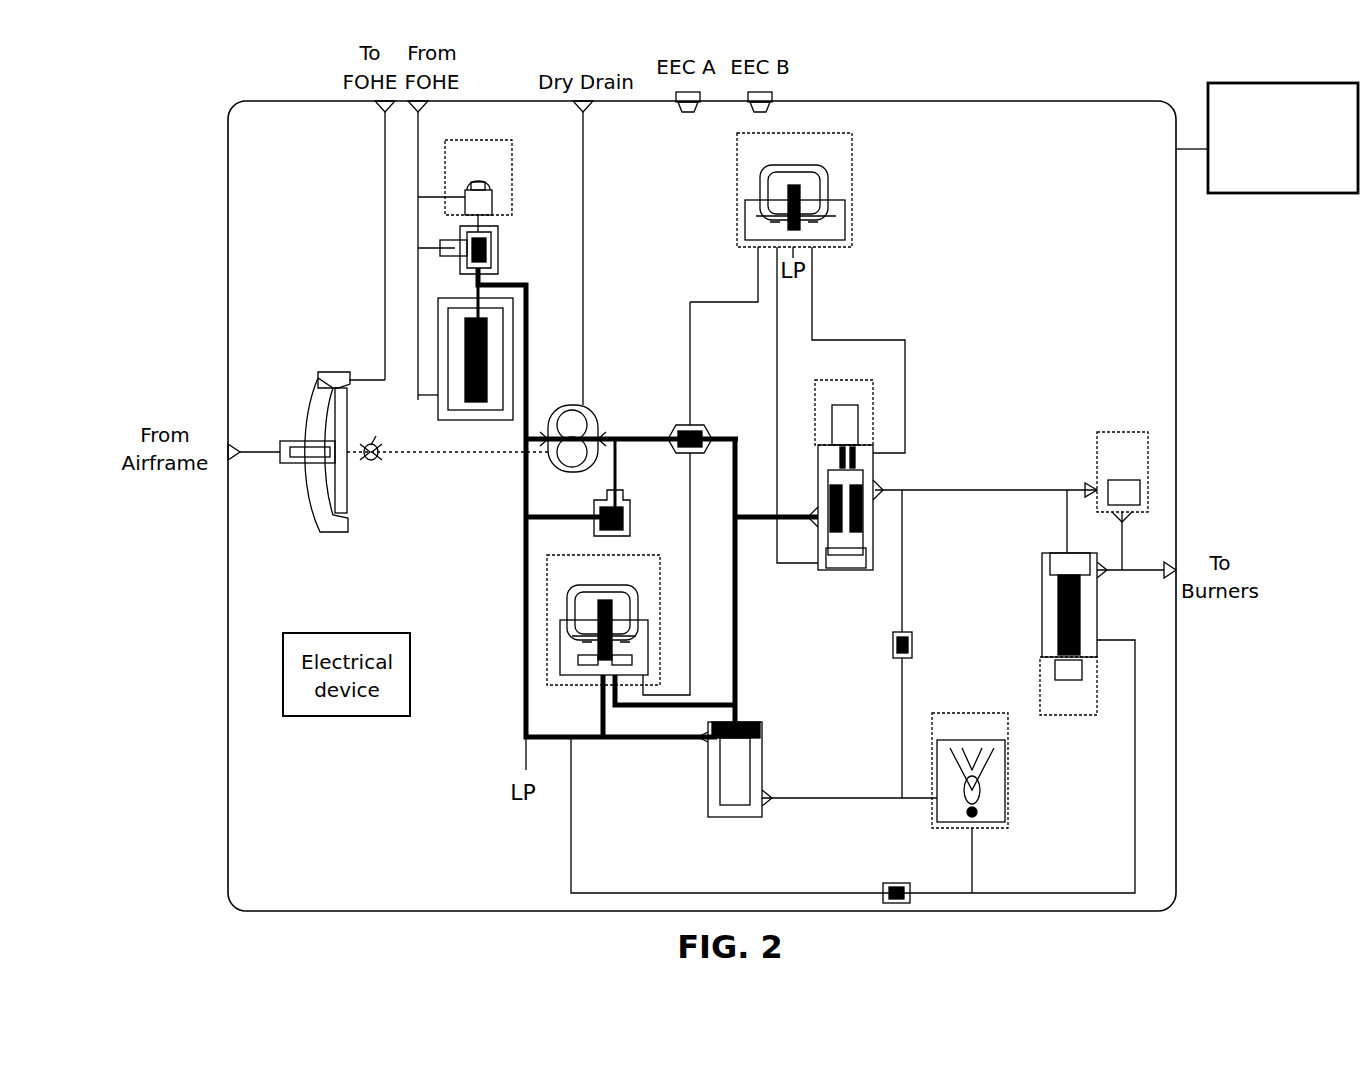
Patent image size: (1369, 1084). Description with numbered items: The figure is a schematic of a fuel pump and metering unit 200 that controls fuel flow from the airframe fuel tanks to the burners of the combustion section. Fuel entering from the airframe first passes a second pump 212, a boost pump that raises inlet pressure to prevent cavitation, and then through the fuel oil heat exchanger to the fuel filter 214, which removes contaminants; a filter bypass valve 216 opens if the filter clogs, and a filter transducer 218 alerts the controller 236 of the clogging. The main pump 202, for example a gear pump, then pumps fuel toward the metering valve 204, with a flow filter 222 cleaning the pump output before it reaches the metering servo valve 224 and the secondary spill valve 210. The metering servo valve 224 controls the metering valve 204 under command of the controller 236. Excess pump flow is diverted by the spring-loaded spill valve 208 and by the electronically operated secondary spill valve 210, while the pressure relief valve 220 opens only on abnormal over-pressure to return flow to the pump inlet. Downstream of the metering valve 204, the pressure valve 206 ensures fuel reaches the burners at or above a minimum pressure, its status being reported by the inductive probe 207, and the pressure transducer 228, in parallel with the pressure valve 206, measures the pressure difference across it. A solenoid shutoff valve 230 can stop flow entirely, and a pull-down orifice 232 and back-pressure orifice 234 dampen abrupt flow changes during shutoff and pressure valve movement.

The fuel pump and metering unit 200 is at (150, 178).
The pump 202 is at (570, 470).
The metering valve 204 is at (822, 462).
The pressure valve 206 is at (1042, 578).
The inductive probe 207 is at (1107, 701).
The spill valve 208 is at (765, 748).
The secondary spill valve 210 is at (670, 564).
The second pump 212 is at (330, 372).
The fuel filter 214 is at (472, 420).
The filter bypass valve 216 is at (498, 248).
The filter transducer 218 is at (522, 148).
The pressure relief valve 220 is at (630, 518).
The flow filter 222 is at (702, 428).
The metering servo valve 224 is at (862, 141).
The pressure transducer 228 is at (1158, 441).
The shutoff valve 230 is at (1018, 721).
The pull-down orifice 232 is at (914, 640).
The back-pressure orifice 234 is at (896, 883).
The controller 236 is at (1267, 153).